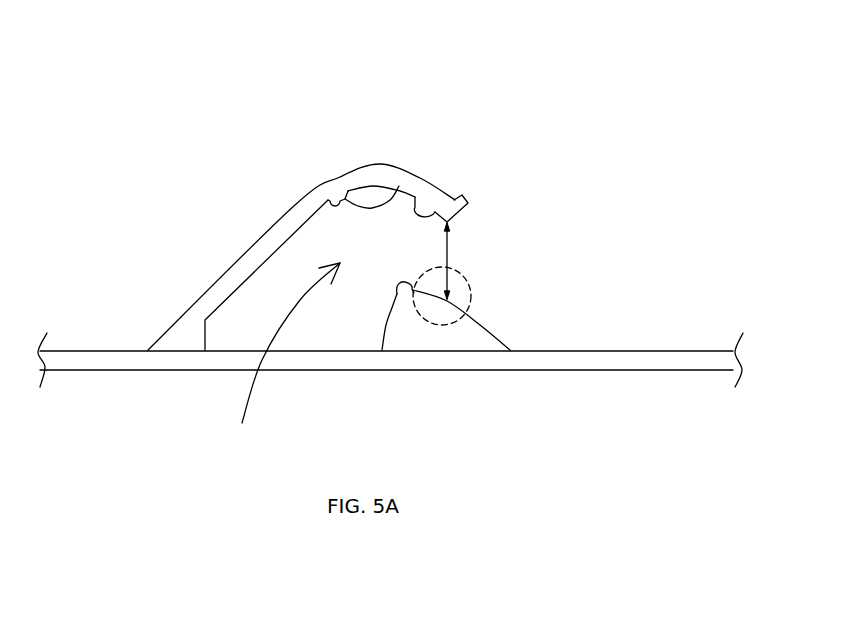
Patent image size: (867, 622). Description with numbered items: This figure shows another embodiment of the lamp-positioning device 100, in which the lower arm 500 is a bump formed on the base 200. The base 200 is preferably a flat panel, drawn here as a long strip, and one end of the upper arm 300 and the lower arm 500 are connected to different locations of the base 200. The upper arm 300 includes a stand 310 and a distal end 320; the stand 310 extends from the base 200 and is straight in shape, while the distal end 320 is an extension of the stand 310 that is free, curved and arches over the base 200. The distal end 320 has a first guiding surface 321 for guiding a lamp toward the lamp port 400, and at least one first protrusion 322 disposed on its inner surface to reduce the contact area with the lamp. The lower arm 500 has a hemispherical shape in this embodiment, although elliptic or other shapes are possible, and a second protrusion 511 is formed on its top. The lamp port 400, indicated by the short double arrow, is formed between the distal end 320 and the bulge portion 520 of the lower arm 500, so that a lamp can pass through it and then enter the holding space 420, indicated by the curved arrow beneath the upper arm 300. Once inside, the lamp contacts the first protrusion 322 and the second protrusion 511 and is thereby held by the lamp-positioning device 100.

The lamp-positioning device 100 is at (131, 33).
The base 200 is at (597, 360).
The upper arm 300 is at (343, 73).
The stand 310 is at (233, 282).
The distal end 320 is at (381, 175).
The first guiding surface 321 is at (454, 197).
The first protrusion 322 is at (428, 197).
The lamp port 400 is at (429, 261).
The holding space 420 is at (280, 360).
The lower arm 500 is at (433, 333).
The second protrusion 511 is at (398, 290).
The bulge portion 520 is at (467, 280).